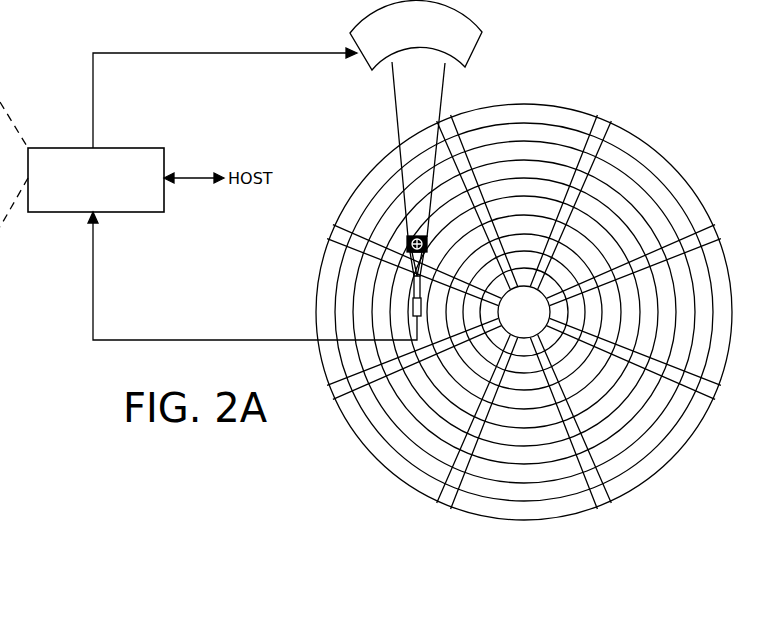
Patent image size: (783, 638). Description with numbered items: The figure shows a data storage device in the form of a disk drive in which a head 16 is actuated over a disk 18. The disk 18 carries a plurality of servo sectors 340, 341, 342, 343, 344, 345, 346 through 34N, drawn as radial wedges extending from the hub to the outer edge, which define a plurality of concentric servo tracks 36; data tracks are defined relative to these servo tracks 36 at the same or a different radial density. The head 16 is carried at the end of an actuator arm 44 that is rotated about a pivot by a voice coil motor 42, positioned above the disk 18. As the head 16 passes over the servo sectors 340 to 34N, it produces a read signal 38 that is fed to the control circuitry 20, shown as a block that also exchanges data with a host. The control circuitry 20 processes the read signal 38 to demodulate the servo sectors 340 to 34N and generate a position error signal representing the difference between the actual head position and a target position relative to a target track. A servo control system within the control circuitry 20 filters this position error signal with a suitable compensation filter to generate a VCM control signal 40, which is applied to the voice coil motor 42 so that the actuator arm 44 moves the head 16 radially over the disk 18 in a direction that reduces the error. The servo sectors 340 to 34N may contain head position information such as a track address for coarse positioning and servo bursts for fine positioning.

The head 16 is at (412, 310).
The disk 18 is at (660, 151).
The control circuitry 20 is at (132, 148).
The servo sector 34N is at (457, 127).
The servo sector 340 is at (604, 128).
The servo sector 341 is at (712, 237).
The servo sector 342 is at (712, 392).
The servo sector 343 is at (595, 500).
The servo sector 344 is at (444, 500).
The servo sector 345 is at (337, 396).
The servo sector 346 is at (344, 230).
The servo track 36 is at (510, 130).
The read signal 38 is at (241, 340).
The control signal 40 is at (93, 86).
The voice coil motor 42 is at (367, 65).
The actuator arm 44 is at (398, 115).